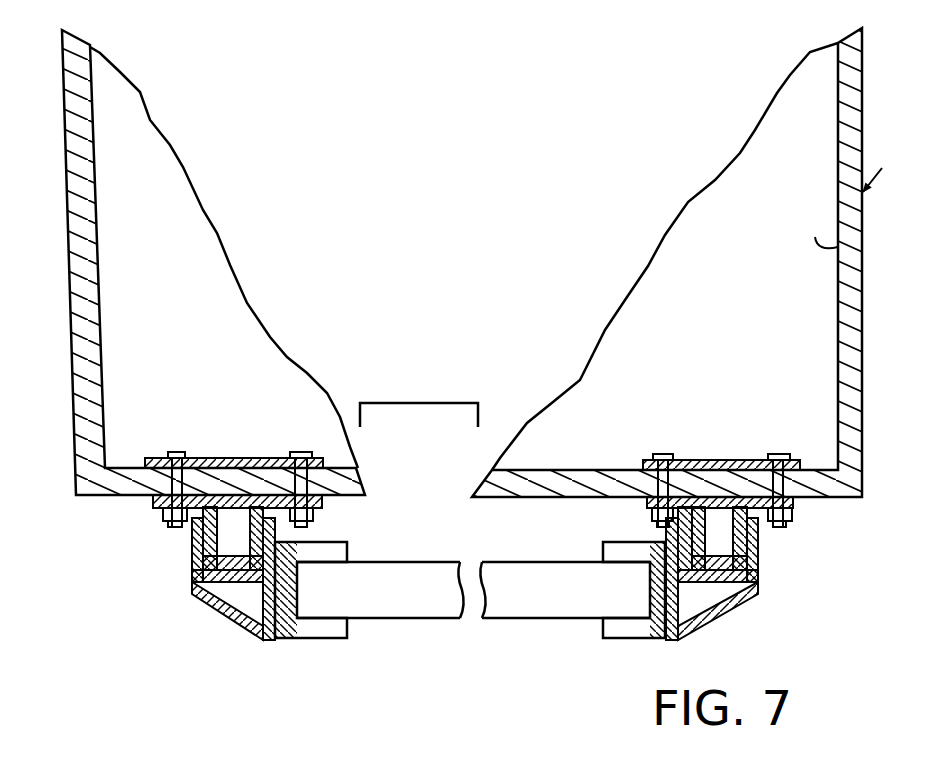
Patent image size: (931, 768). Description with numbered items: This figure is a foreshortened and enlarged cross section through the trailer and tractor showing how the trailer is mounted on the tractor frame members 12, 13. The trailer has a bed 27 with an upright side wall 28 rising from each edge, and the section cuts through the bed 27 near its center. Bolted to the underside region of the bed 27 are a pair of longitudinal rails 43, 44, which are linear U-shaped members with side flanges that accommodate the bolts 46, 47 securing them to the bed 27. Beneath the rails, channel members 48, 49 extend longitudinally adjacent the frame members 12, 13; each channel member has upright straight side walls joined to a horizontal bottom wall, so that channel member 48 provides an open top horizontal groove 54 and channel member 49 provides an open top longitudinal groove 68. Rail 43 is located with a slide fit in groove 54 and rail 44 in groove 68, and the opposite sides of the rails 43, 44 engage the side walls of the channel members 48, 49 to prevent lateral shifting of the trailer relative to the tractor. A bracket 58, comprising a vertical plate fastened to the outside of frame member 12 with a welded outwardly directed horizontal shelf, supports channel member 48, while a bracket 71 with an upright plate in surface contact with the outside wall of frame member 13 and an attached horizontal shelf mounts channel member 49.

The frame member 12 is at (306, 632).
The frame member 13 is at (627, 627).
The bed 27 is at (585, 483).
The side wall 28 is at (91, 257).
The rail 43 is at (212, 545).
The rail 44 is at (745, 527).
The bolt 46 is at (660, 454).
The bolt 47 is at (173, 452).
The channel member 48 is at (188, 576).
The channel member 49 is at (762, 552).
The groove 54 is at (237, 589).
The bracket 58 is at (235, 623).
The groove 68 is at (725, 587).
The bracket 71 is at (720, 614).